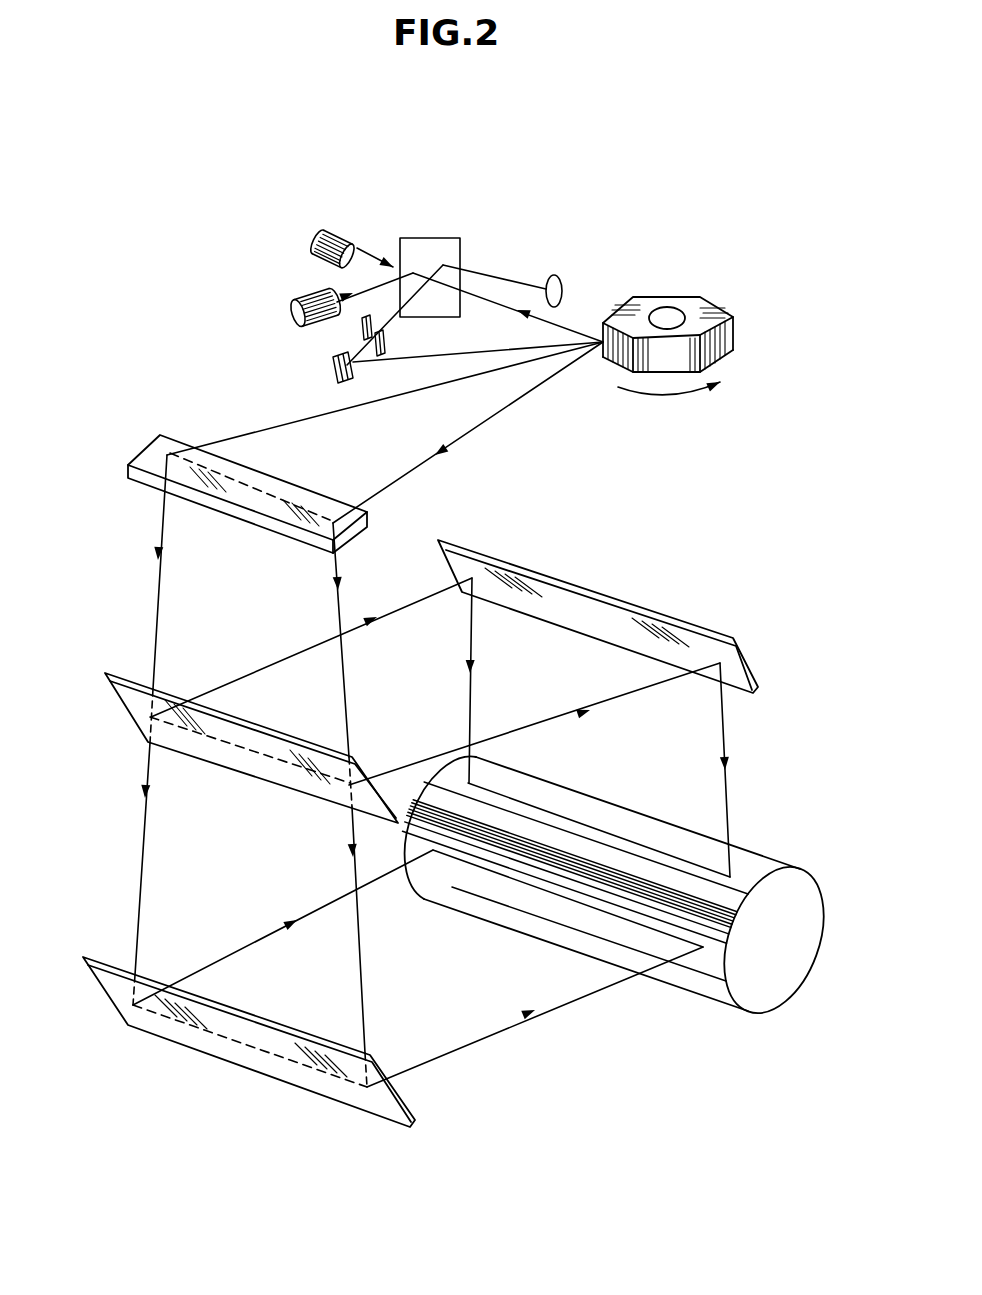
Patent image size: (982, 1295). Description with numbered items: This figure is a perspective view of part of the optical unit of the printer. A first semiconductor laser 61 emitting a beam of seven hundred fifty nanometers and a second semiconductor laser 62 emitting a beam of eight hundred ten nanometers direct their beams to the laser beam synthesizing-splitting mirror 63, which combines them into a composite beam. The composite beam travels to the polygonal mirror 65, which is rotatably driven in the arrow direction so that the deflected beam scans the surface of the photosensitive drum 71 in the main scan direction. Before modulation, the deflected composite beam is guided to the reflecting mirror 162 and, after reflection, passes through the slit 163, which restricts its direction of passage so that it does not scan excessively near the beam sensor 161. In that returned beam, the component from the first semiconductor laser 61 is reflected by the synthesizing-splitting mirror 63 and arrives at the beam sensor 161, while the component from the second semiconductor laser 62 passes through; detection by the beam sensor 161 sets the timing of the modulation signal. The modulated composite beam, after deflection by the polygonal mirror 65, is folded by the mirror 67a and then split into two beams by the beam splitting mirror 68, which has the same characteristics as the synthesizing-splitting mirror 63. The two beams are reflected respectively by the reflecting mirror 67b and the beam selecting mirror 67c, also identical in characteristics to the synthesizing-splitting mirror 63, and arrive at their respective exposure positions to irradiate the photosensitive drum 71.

The first semiconductor laser 61 is at (290, 312).
The second semiconductor laser 62 is at (337, 228).
The laser beam synthesizing-splitting mirror 63 is at (438, 238).
The beam sensor 161 is at (557, 277).
The reflecting mirror 162 is at (333, 373).
The slit 163 is at (360, 328).
The polygonal mirror 65 is at (735, 323).
The mirror 67a is at (128, 472).
The reflecting mirror 67b is at (187, 1050).
The beam selecting mirror 67c is at (747, 657).
The beam splitting mirror 68 is at (123, 707).
The photosensitive drum 71 is at (805, 870).